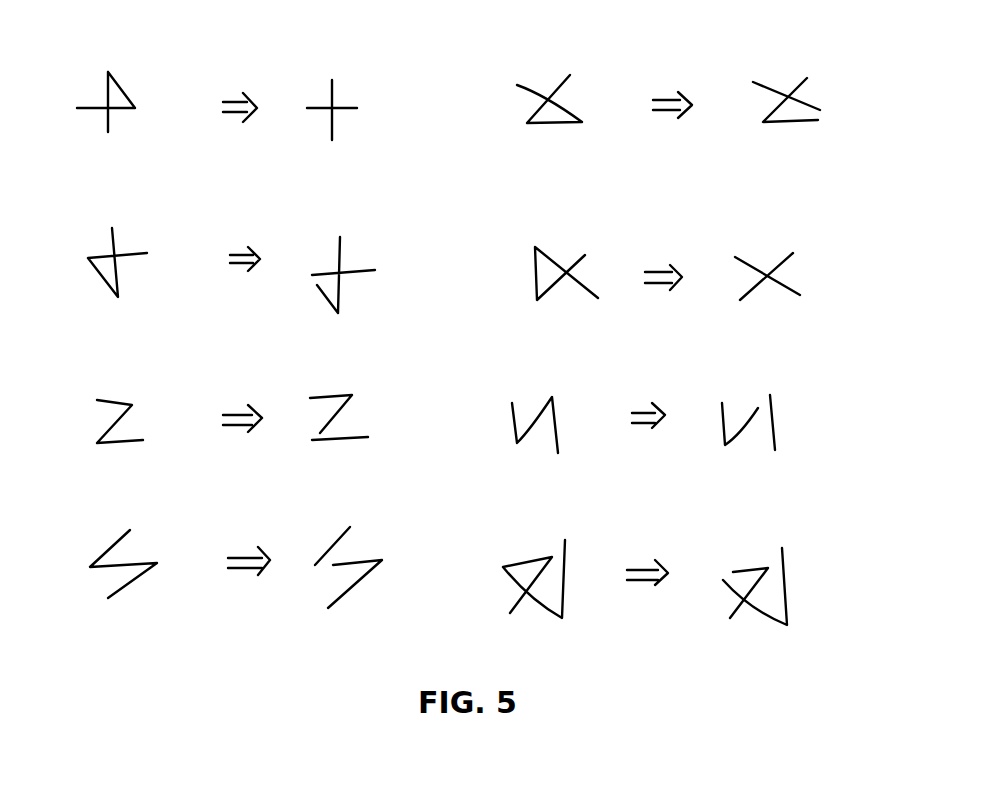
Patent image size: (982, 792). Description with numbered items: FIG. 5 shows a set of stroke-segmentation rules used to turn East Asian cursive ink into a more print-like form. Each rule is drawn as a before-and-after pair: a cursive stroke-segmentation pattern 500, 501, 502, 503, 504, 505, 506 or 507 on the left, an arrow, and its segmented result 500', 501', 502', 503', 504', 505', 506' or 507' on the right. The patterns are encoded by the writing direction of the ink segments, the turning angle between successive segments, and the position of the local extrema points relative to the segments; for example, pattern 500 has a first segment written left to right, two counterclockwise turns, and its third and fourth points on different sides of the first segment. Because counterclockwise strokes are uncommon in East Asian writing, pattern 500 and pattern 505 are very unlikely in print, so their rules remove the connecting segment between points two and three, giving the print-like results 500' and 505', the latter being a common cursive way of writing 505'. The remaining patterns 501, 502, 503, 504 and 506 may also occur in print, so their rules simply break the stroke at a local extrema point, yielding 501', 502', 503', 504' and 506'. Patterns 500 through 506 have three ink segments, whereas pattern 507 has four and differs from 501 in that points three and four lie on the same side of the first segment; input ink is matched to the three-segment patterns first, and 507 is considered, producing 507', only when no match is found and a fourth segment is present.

The stroke-segmentation pattern 500 is at (96, 107).
The segmented result of pattern 500 500' is at (346, 116).
The stroke-segmentation pattern 501 is at (107, 261).
The segmented result of pattern 501 501' is at (357, 277).
The stroke-segmentation pattern 502 is at (99, 414).
The segmented result of pattern 502 502' is at (351, 418).
The stroke-segmentation pattern 503 is at (103, 572).
The segmented result of pattern 503 503' is at (350, 567).
The stroke-segmentation pattern 504 is at (534, 104).
The segmented result of pattern 504 504' is at (806, 102).
The stroke-segmentation pattern 505 is at (541, 276).
The segmented result of pattern 505 505' is at (795, 283).
The stroke-segmentation pattern 506 is at (518, 424).
The segmented result of pattern 506 506' is at (768, 424).
The stroke-segmentation pattern 507 is at (515, 581).
The segmented result of pattern 507 507' is at (774, 591).